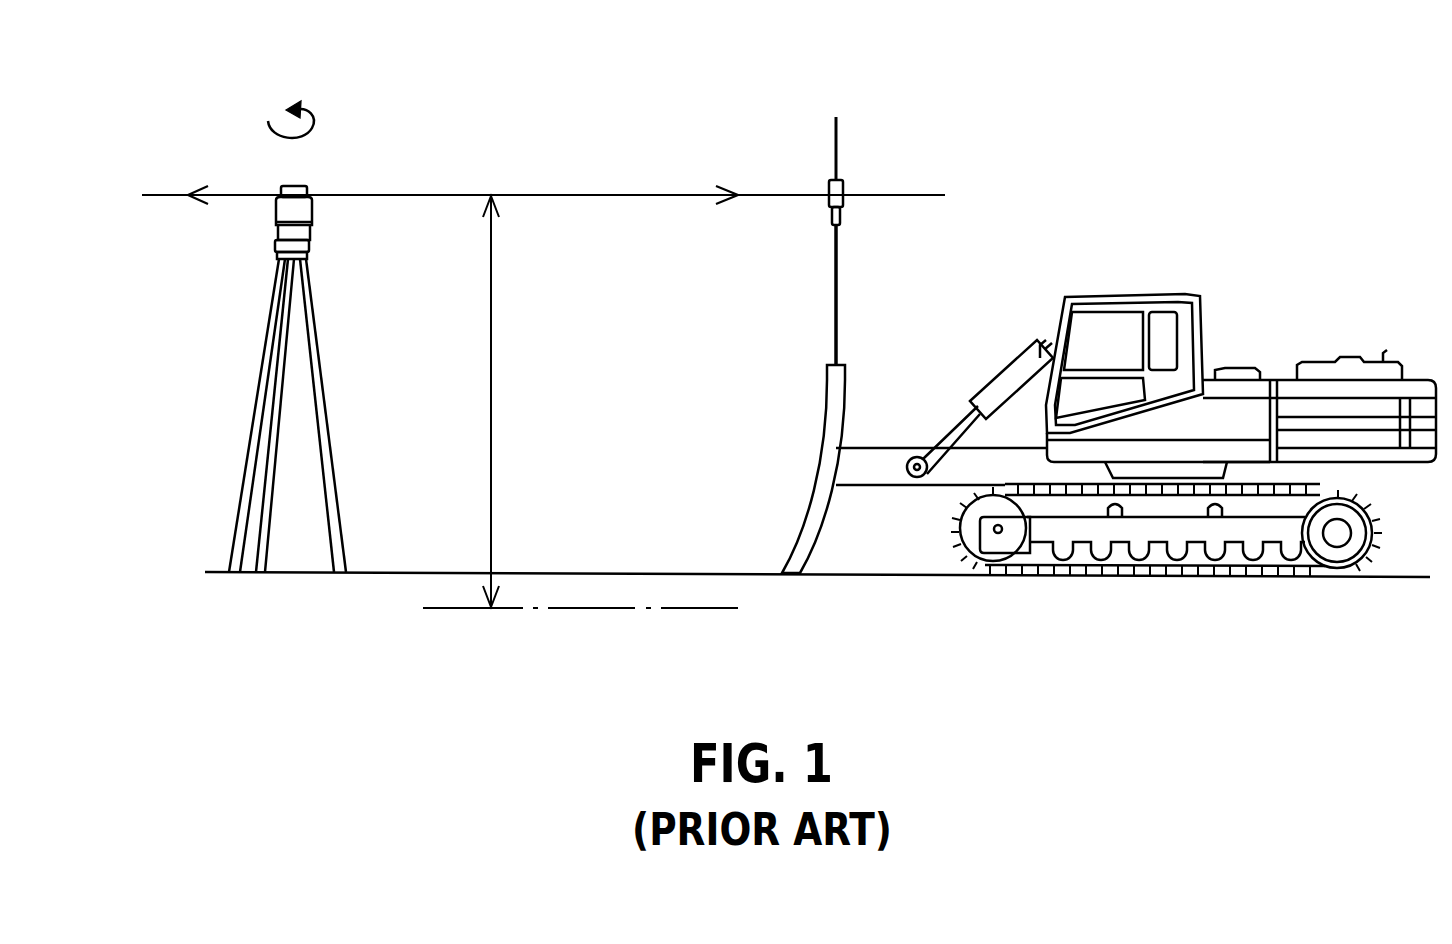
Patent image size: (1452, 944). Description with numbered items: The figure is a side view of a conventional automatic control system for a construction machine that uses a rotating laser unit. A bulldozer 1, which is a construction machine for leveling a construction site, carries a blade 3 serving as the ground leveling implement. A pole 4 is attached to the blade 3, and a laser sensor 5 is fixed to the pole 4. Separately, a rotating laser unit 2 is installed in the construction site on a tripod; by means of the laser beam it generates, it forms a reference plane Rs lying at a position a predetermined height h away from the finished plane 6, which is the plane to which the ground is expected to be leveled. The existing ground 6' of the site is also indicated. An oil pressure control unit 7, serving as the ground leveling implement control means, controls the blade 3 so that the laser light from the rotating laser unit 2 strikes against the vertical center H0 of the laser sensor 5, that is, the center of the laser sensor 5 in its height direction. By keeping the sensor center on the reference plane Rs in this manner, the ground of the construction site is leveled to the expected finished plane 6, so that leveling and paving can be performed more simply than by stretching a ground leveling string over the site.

The bulldozer 1 is at (1250, 355).
The rotating laser unit 2 is at (313, 230).
The blade 3 is at (818, 470).
The pole 4 is at (838, 315).
The laser sensor 5 is at (843, 207).
The finished plane 6 is at (580, 559).
The ground 6' is at (675, 535).
The oil pressure control unit 7 is at (1000, 392).
The predetermined height h is at (491, 331).
The reference plane Rs is at (578, 195).
The vertical center of the laser sensor H0 is at (843, 197).